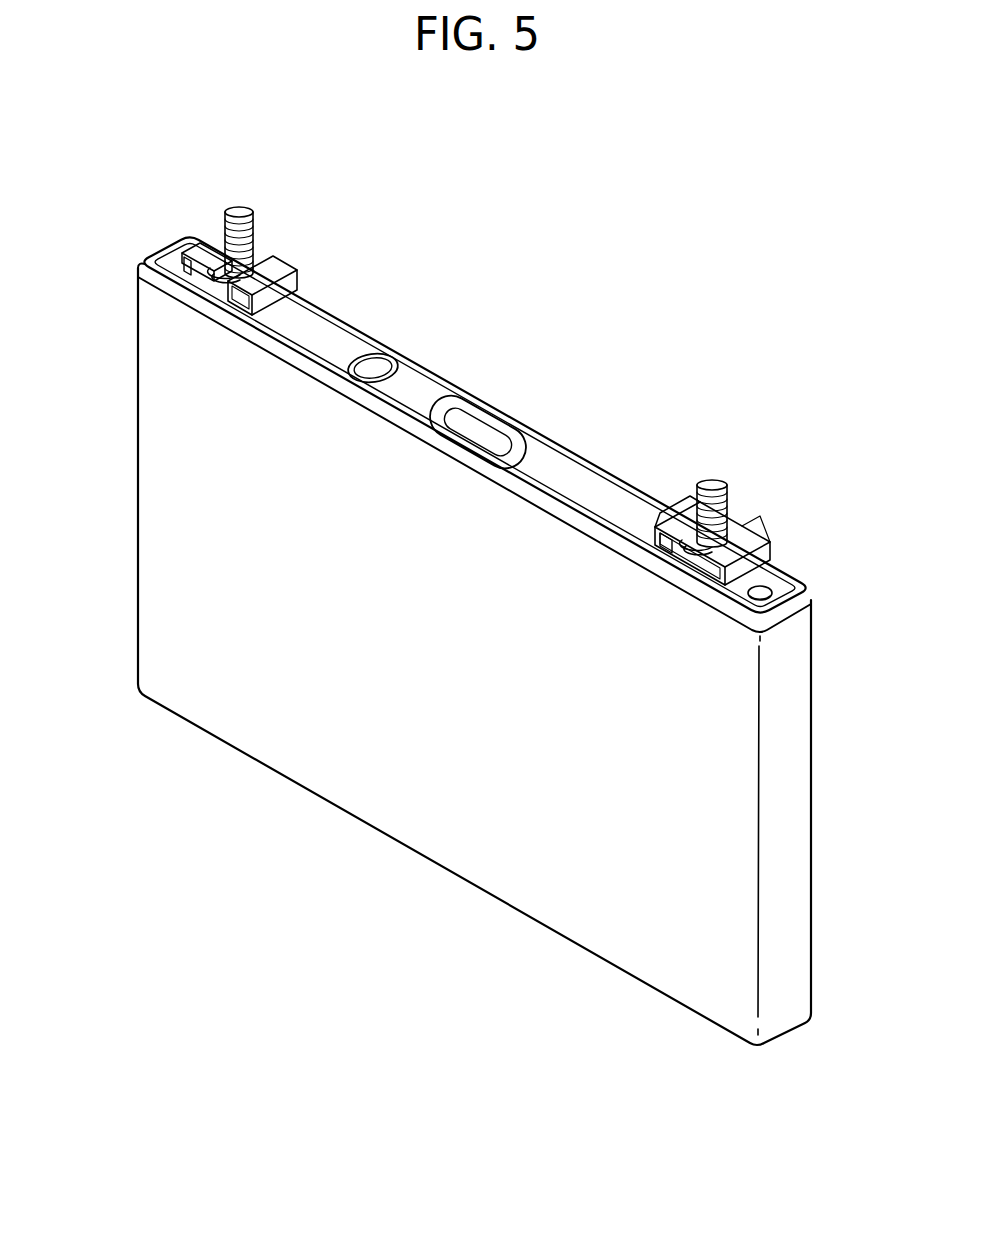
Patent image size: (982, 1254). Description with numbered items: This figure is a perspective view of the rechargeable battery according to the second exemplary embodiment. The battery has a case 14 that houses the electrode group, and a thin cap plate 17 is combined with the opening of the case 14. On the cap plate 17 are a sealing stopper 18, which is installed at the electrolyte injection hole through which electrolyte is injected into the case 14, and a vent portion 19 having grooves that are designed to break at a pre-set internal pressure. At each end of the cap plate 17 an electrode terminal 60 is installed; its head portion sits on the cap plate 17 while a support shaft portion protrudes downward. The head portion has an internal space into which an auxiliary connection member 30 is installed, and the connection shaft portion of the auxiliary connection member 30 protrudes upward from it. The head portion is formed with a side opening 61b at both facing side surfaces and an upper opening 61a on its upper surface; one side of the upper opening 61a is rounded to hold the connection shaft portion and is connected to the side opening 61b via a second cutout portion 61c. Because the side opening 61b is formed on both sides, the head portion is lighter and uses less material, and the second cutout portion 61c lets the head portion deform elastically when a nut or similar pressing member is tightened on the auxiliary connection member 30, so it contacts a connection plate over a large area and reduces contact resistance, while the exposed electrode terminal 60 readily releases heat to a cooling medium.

The case 14 is at (425, 829).
The cap plate 17 is at (453, 386).
The sealing stopper 18 is at (373, 366).
The vent portion 19 is at (497, 438).
The auxiliary connection member 30 is at (240, 210).
The electrode terminal 60 is at (298, 268).
The upper opening 61a is at (215, 258).
The side opening 61b is at (196, 268).
The second cutout portion 61c is at (258, 252).